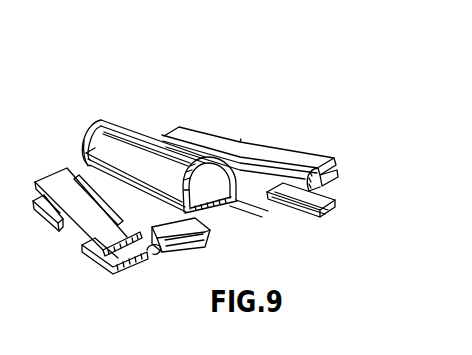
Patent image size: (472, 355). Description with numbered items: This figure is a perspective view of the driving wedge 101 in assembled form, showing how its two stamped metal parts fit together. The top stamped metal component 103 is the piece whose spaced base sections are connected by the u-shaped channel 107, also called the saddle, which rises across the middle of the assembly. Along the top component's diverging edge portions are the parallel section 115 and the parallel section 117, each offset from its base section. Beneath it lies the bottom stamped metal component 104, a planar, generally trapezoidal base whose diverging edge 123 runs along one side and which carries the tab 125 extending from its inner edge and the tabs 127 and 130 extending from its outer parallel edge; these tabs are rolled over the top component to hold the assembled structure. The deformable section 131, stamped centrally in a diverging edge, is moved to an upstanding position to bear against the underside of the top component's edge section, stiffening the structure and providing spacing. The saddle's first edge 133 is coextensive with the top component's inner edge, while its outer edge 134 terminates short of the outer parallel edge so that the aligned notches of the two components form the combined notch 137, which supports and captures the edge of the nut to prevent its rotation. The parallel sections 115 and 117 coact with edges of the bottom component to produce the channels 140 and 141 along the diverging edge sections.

The driving wedge 101 is at (257, 108).
The stamped metal component 103 is at (95, 125).
The bottom stamped metal component 104 is at (137, 266).
The u-shaped channel 107 is at (130, 123).
The parallel section 115 is at (52, 215).
The parallel section 117 is at (254, 149).
The diverging edge 123 is at (100, 267).
The tab 125 is at (80, 168).
The tab 127 is at (189, 251).
The tab 130 is at (307, 203).
The deformable section 131 is at (77, 239).
The first edge 133 is at (81, 167).
The outer edge 134 is at (277, 150).
The notch 137 is at (226, 213).
The channel 140 is at (121, 258).
The channel 141 is at (322, 178).